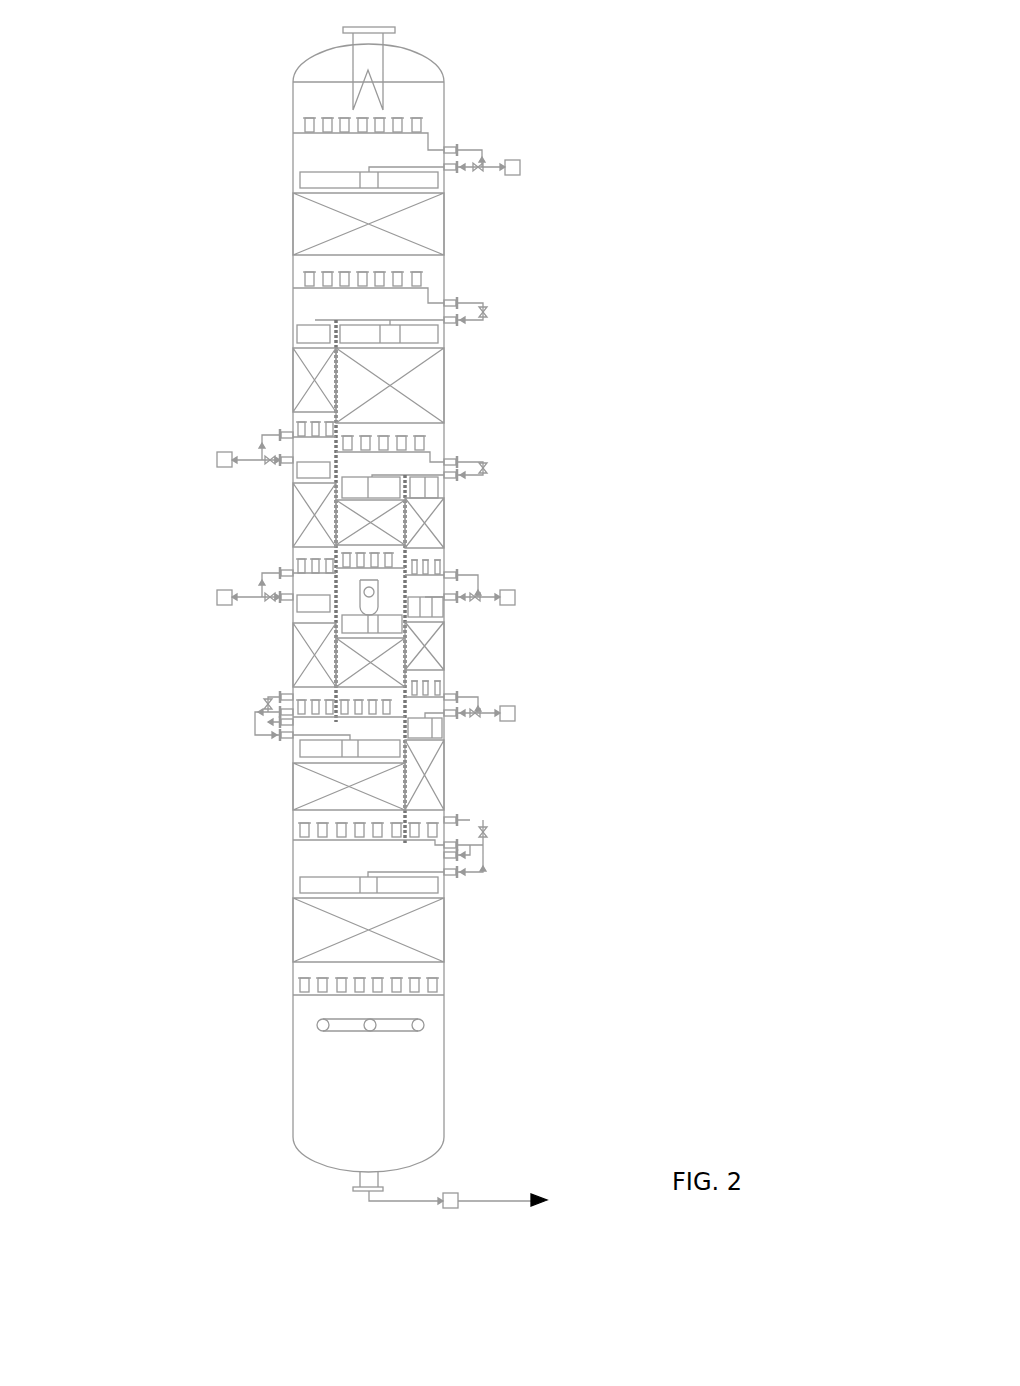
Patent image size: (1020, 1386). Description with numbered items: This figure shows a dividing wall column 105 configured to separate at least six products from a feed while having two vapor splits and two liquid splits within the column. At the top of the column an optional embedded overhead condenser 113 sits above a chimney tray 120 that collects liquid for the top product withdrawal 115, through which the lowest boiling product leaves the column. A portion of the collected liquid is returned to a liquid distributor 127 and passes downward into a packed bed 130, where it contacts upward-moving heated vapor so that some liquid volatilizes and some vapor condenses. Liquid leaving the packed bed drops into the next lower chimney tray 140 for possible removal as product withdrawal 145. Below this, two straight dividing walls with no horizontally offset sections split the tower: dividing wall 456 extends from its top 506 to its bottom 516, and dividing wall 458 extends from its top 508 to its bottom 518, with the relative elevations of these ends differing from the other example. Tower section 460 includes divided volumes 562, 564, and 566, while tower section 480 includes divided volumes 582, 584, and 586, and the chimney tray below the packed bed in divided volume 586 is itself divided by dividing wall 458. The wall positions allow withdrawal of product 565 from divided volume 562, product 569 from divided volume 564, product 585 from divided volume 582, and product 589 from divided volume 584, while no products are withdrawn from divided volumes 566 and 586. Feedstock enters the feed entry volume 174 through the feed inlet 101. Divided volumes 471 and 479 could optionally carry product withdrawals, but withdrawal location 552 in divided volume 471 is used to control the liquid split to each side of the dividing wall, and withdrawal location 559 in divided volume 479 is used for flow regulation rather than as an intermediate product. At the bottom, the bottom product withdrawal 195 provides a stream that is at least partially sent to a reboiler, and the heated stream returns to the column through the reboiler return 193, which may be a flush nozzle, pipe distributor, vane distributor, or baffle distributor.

The distillation column 105 is at (290, 217).
The embedded overhead condenser 113 is at (397, 70).
The chimney tray 120 is at (436, 118).
The top product withdrawal 115 is at (533, 162).
The liquid distributor 127 is at (450, 182).
The packed bed 130 is at (450, 236).
The chimney tray 140 is at (305, 263).
The product withdrawal 145 is at (495, 304).
The top of dividing wall 506 is at (331, 341).
The dividing wall 456 is at (352, 372).
The bottom of dividing wall 516 is at (337, 720).
The divided volume 562 is at (300, 385).
The divided volume 471 is at (440, 389).
The tower section 460 is at (280, 407).
The product 565 is at (196, 452).
The divided volume 564 is at (305, 520).
The withdrawal location 552 is at (495, 463).
The top of dividing wall 508 is at (413, 497).
The dividing wall 458 is at (420, 523).
The bottom of dividing wall 518 is at (405, 845).
The divided volume 582 is at (433, 517).
The product 569 is at (210, 607).
The feed entry volume 174 is at (338, 590).
The product 585 is at (523, 590).
The feed inlet 101 is at (430, 603).
The divided volume 566 is at (300, 653).
The divided volume 584 is at (437, 645).
The product 589 is at (523, 715).
The tower section 480 is at (462, 737).
The divided volume 586 is at (437, 770).
The divided volume 479 is at (298, 792).
The withdrawal location 559 is at (482, 822).
The reboiler return 193 is at (386, 1035).
The bottom product withdrawal 195 is at (353, 1200).